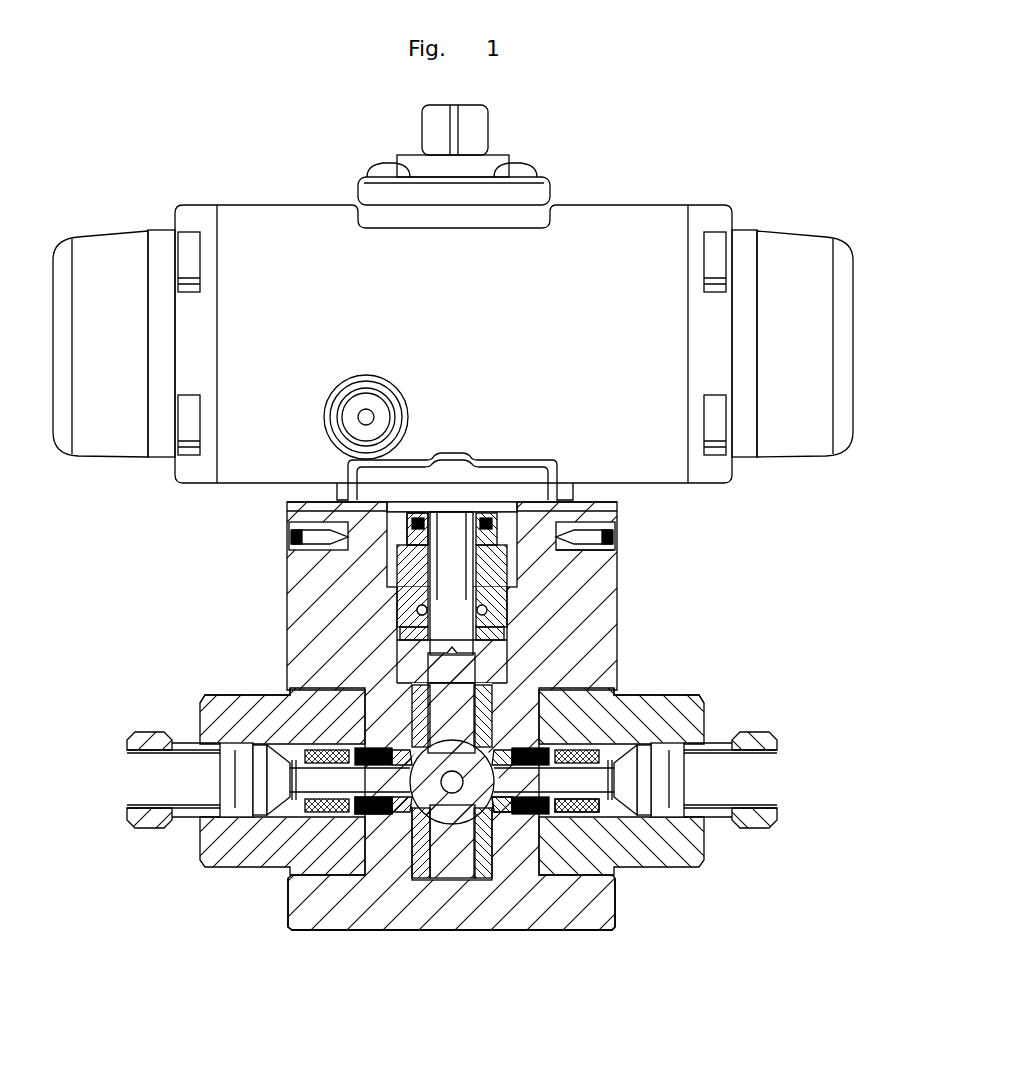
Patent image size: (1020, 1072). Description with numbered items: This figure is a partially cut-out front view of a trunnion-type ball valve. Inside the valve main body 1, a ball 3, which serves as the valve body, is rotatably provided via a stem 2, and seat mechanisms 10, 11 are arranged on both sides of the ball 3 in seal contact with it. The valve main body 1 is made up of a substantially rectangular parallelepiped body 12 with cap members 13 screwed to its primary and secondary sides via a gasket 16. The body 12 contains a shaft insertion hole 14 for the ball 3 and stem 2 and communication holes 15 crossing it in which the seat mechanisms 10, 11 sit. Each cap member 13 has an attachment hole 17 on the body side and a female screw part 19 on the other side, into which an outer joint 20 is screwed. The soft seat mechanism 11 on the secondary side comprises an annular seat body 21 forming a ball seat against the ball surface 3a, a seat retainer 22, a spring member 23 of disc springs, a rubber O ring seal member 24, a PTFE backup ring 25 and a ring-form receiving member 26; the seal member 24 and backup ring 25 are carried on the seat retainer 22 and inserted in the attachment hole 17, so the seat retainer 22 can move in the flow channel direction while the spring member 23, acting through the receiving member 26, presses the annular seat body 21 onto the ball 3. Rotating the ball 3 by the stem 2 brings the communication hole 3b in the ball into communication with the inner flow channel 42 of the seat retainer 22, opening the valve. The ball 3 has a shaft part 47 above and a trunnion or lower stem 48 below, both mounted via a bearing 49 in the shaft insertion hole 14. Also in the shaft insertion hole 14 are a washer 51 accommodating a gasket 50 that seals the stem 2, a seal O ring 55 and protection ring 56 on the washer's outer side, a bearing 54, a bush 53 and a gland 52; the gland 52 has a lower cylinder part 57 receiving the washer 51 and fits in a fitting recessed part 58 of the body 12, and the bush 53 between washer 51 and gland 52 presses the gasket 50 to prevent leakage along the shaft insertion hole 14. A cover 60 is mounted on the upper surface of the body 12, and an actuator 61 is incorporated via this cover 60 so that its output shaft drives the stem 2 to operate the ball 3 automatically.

The valve main body 1 is at (431, 942).
The stem 2 is at (475, 571).
The ball 3 is at (531, 830).
The ball surface 3a is at (616, 928).
The communication hole 3b is at (462, 840).
The seat mechanism 10 is at (405, 845).
The seat mechanism 11 is at (505, 860).
The body 12 is at (300, 628).
The cap member 13 is at (220, 868).
The shaft insertion hole 14 is at (545, 705).
The communication hole 15 is at (283, 693).
The gasket 16 is at (578, 752).
The attachment hole 17 is at (280, 757).
The female screw part 19 is at (215, 752).
The outer joint 20 is at (150, 826).
The annular seat body 21 is at (545, 760).
The seat retainer 22 is at (530, 815).
The spring member 23 is at (372, 812).
The seal member 24 is at (345, 812).
The backup ring 25 is at (295, 815).
The receiving member 26 is at (580, 812).
The inner flow channel 42 is at (665, 850).
The shaft part 47 is at (505, 640).
The trunnion (lower stem) 48 is at (443, 870).
The bearing 49 is at (400, 668).
The gasket 50 is at (395, 560).
The washer 51 is at (600, 556).
The gland 52 is at (612, 508).
The bush 53 is at (402, 528).
The bearing 54 is at (600, 598).
The seal O ring 55 is at (466, 560).
The protection ring 56 is at (455, 560).
The cylinder part 57 is at (292, 537).
The fitting recessed part 58 is at (612, 536).
The cover 60 is at (292, 514).
The actuator 61 is at (659, 202).